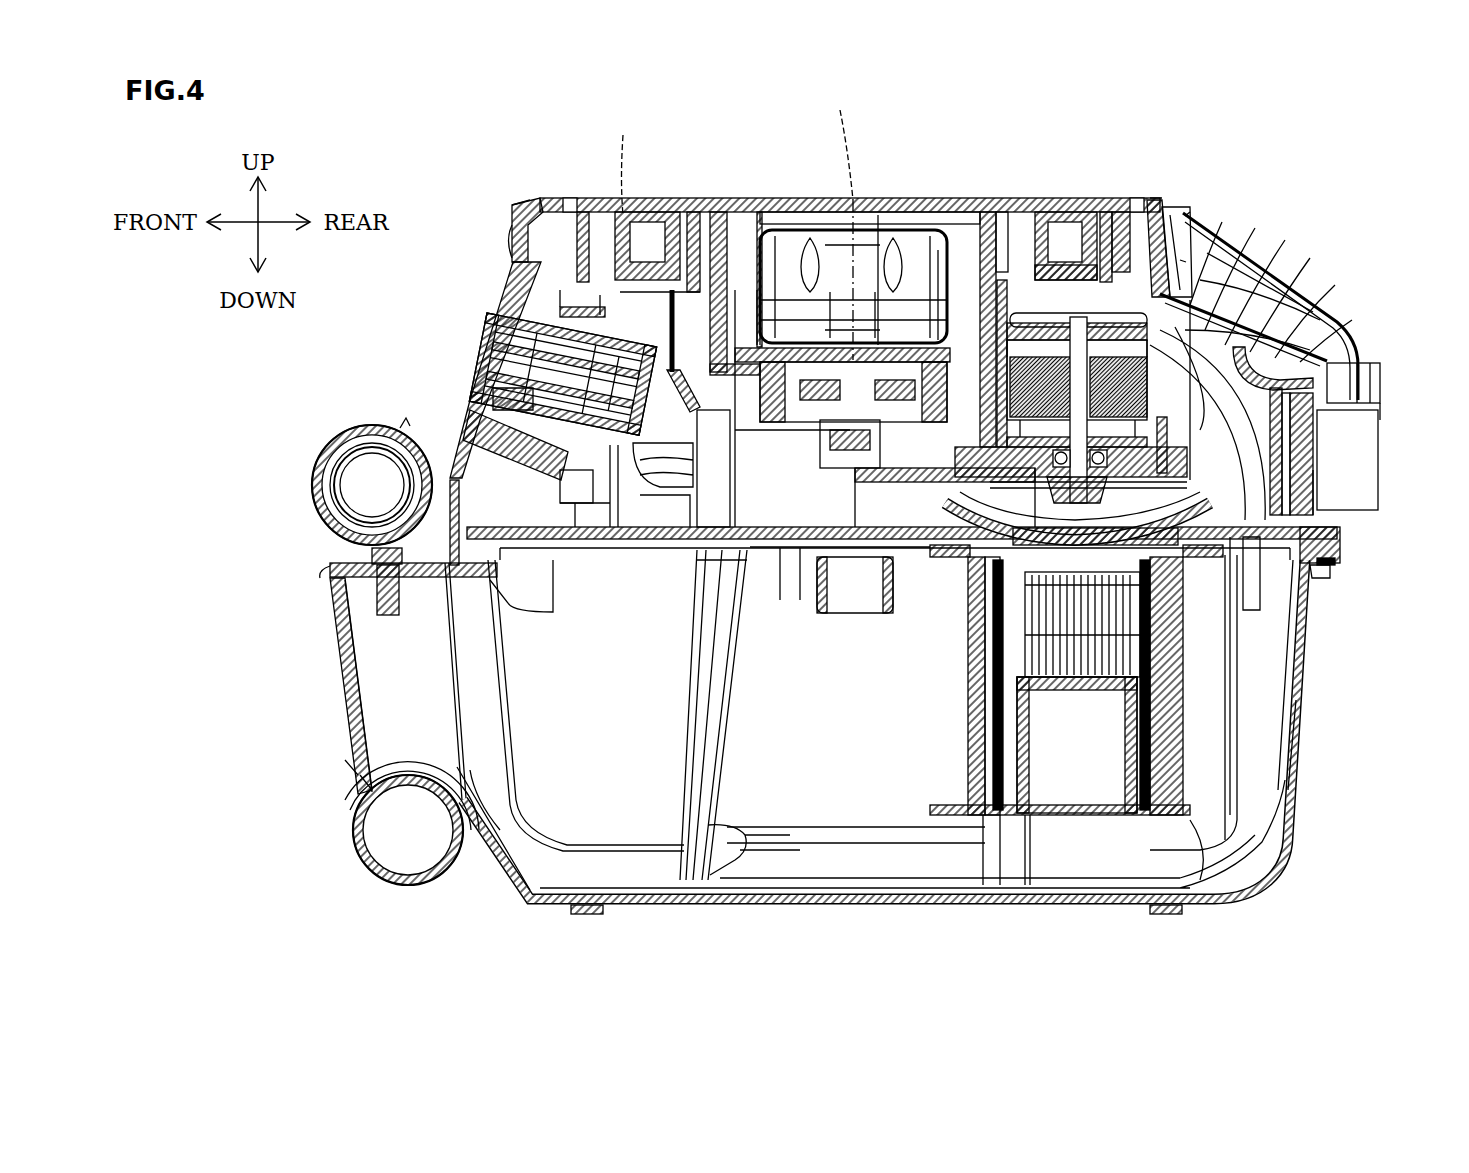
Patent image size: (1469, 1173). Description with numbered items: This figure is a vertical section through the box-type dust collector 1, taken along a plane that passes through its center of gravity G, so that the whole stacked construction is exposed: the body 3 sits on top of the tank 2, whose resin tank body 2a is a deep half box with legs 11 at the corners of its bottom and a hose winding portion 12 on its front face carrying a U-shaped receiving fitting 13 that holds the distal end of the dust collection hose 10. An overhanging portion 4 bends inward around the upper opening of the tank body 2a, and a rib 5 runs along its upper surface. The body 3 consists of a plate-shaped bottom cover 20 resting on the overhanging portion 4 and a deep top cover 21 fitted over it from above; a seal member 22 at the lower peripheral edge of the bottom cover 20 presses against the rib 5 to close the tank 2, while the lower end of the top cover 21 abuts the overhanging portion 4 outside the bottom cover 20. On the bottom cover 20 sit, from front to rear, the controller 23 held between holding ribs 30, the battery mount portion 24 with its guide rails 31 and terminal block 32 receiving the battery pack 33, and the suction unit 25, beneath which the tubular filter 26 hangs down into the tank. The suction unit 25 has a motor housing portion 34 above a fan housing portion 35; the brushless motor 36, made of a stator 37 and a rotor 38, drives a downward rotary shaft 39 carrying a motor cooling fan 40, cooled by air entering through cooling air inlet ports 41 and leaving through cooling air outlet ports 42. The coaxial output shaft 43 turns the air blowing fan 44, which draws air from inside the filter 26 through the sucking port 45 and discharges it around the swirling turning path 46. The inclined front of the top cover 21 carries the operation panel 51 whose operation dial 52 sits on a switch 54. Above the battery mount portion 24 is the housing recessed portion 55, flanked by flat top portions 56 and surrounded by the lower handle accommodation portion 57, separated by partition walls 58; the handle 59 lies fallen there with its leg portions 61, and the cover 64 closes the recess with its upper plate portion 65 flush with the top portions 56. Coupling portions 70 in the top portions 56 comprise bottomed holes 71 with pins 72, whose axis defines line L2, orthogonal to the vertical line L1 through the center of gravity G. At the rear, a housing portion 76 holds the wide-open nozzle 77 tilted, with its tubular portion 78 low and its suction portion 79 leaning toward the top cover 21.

The dust collector 1 is at (1385, 180).
The tank 2 is at (1305, 716).
The tank body 2a is at (1290, 777).
The body 3 is at (1178, 205).
The overhanging portion 4 is at (1335, 565).
The rib 5 is at (1320, 578).
The dust collection hose 10 is at (355, 832).
The legs 11 is at (588, 918).
The hose winding portion 12 is at (335, 690).
The receiving fitting 13 is at (303, 478).
The bottom cover 20 is at (622, 548).
The top cover 21 is at (1313, 420).
The seal member 22 is at (1340, 537).
The controller 23 is at (655, 540).
The battery mount portion 24 is at (746, 288).
The suction unit 25 is at (1262, 300).
The filter 26 is at (968, 735).
The holding ribs 30 is at (588, 540).
The guide rails 31 is at (740, 405).
The terminal block 32 is at (778, 430).
The battery pack 33 is at (938, 250).
The motor housing portion 34 is at (1195, 245).
The fan housing portion 35 is at (1340, 350).
The brushless motor 36 is at (1085, 215).
The stator 37 is at (1215, 368).
The rotor 38 is at (1020, 205).
The rotary shaft 39 is at (955, 520).
The motor cooling fan 40 is at (1285, 395).
The cooling air inlet ports 41 is at (968, 200).
The cooling air outlet ports 42 is at (975, 568).
The output shaft 43 is at (1105, 685).
The air blowing fan 44 is at (1313, 492).
The sucking port 45 is at (1060, 690).
The turning path 46 is at (845, 500).
The operation panel 51 is at (512, 268).
The operation dial 52 is at (480, 332).
The switch 54 is at (580, 405).
The housing recessed portion 55 is at (805, 245).
The top portions 56 is at (590, 205).
The handle accommodation portion 57 is at (690, 205).
The partition walls 58 is at (718, 205).
The handle 59 is at (1065, 200).
The leg portions 61 is at (646, 215).
The cover 64 is at (902, 200).
The upper plate portion 65 is at (880, 205).
The coupling portions 70 is at (572, 198).
The bottomed holes 71 is at (512, 240).
The pins 72 is at (530, 215).
The housing portion 76 is at (1332, 345).
The wide-open nozzle 77 is at (1372, 338).
The tubular portion 78 is at (1365, 447).
The suction portion 79 is at (1272, 365).
The center of gravity G is at (862, 483).
The line L1 is at (832, 220).
The line L2 is at (622, 159).